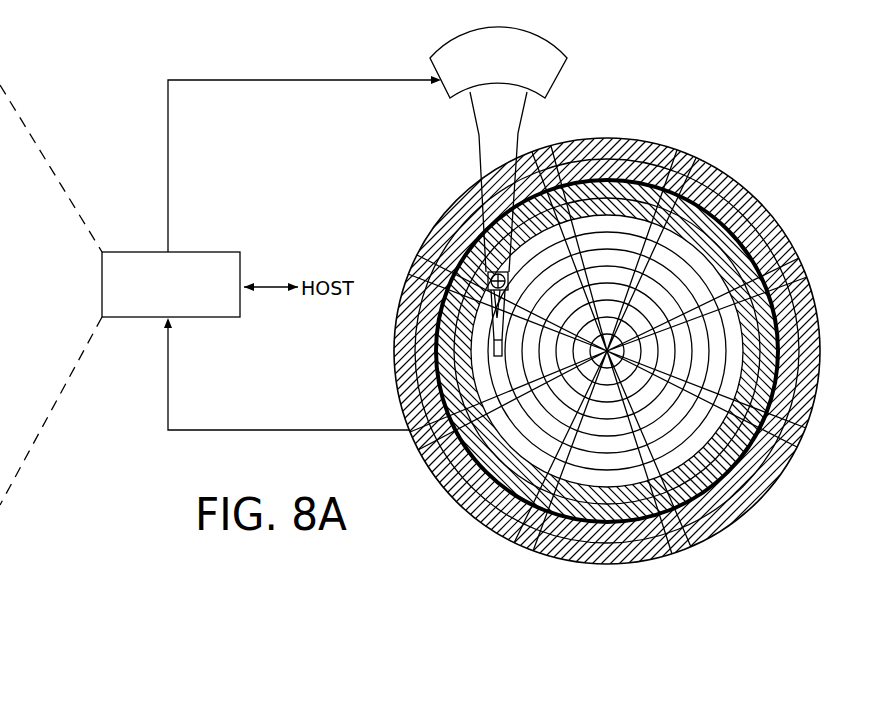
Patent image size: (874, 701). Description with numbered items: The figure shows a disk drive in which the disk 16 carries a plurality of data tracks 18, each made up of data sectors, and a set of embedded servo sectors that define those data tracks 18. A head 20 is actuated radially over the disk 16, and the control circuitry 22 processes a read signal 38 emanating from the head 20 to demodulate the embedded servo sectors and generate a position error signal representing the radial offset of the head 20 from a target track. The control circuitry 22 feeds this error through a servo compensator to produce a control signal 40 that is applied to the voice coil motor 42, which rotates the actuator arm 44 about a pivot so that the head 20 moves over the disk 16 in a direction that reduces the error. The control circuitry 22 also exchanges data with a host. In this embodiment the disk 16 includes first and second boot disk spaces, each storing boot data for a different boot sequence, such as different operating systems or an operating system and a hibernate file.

The disk 16 is at (755, 190).
The data tracks 18 is at (614, 155).
The head 20 is at (488, 355).
The control circuitry 22 is at (207, 251).
The read signal 38 is at (296, 428).
The control signal 40 is at (167, 152).
The voice coil motor 42 is at (452, 92).
The actuator arm 44 is at (482, 160).